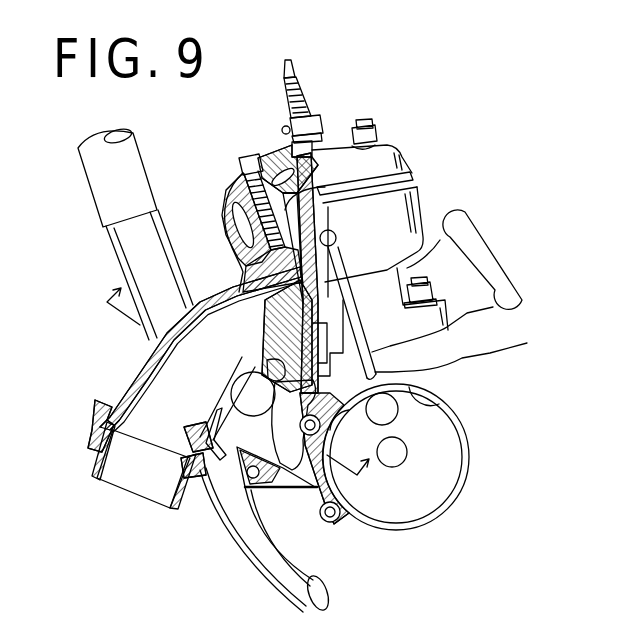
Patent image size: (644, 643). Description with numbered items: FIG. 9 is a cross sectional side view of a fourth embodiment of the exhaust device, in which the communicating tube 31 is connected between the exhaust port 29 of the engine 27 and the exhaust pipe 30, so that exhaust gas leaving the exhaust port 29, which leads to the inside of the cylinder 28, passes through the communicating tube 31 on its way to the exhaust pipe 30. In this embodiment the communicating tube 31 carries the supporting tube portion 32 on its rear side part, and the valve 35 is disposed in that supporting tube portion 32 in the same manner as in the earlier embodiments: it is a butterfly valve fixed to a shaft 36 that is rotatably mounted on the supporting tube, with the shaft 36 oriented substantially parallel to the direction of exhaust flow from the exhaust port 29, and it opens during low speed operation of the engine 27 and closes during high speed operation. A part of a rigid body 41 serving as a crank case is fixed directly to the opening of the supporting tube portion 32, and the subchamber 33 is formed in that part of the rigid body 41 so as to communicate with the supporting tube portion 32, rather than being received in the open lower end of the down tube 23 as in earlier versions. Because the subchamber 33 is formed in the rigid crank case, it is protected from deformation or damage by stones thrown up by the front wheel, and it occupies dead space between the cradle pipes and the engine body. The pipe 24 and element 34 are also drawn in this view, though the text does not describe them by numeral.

The down tube 23 is at (88, 186).
The fuel pipe 24 is at (250, 560).
The engine 27 is at (427, 158).
The cylinder 28 is at (415, 213).
The exhaust port 29 is at (262, 355).
The exhaust pipe 30 is at (100, 479).
The communicating tube 31 is at (123, 399).
The supporting tube portion 32 is at (203, 470).
The subchamber 33 is at (292, 470).
The nozzle 34 is at (220, 400).
The valve 35 is at (237, 380).
The shaft 36 is at (268, 407).
The rigid body 41 is at (308, 492).